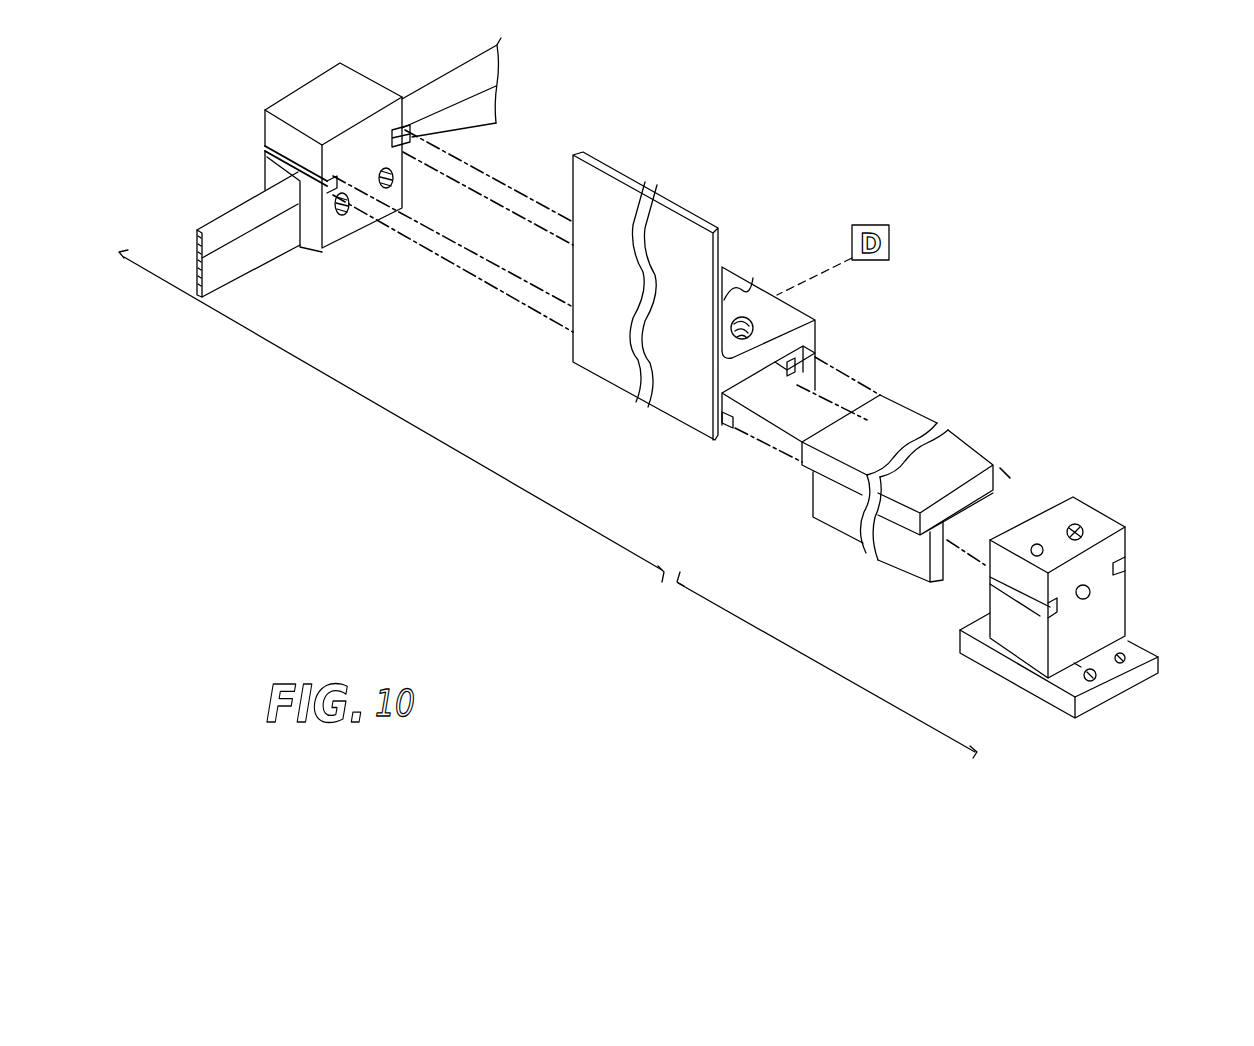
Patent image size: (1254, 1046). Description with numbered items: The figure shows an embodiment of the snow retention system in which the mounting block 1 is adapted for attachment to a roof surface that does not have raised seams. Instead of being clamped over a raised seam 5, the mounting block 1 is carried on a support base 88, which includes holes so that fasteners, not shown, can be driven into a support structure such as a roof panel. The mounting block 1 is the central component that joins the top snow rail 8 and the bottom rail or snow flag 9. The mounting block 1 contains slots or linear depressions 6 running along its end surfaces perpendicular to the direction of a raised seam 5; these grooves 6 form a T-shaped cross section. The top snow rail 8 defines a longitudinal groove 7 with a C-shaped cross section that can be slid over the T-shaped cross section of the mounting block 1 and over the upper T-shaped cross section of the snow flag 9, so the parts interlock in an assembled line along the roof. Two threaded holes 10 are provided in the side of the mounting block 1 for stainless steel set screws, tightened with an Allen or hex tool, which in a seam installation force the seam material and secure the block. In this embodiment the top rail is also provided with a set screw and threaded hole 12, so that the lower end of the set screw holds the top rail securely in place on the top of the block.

The mounting block 1 is at (1058, 517).
The raised seam 5 is at (217, 228).
The slots or linear depressions 6 is at (402, 124).
The longitudinal groove 7 is at (791, 377).
The top snow rail 8 is at (717, 243).
The snow flag 9 is at (997, 472).
The threaded holes 10 is at (395, 185).
The set screw and threaded hole 12 is at (752, 325).
The support base 88 is at (1142, 650).